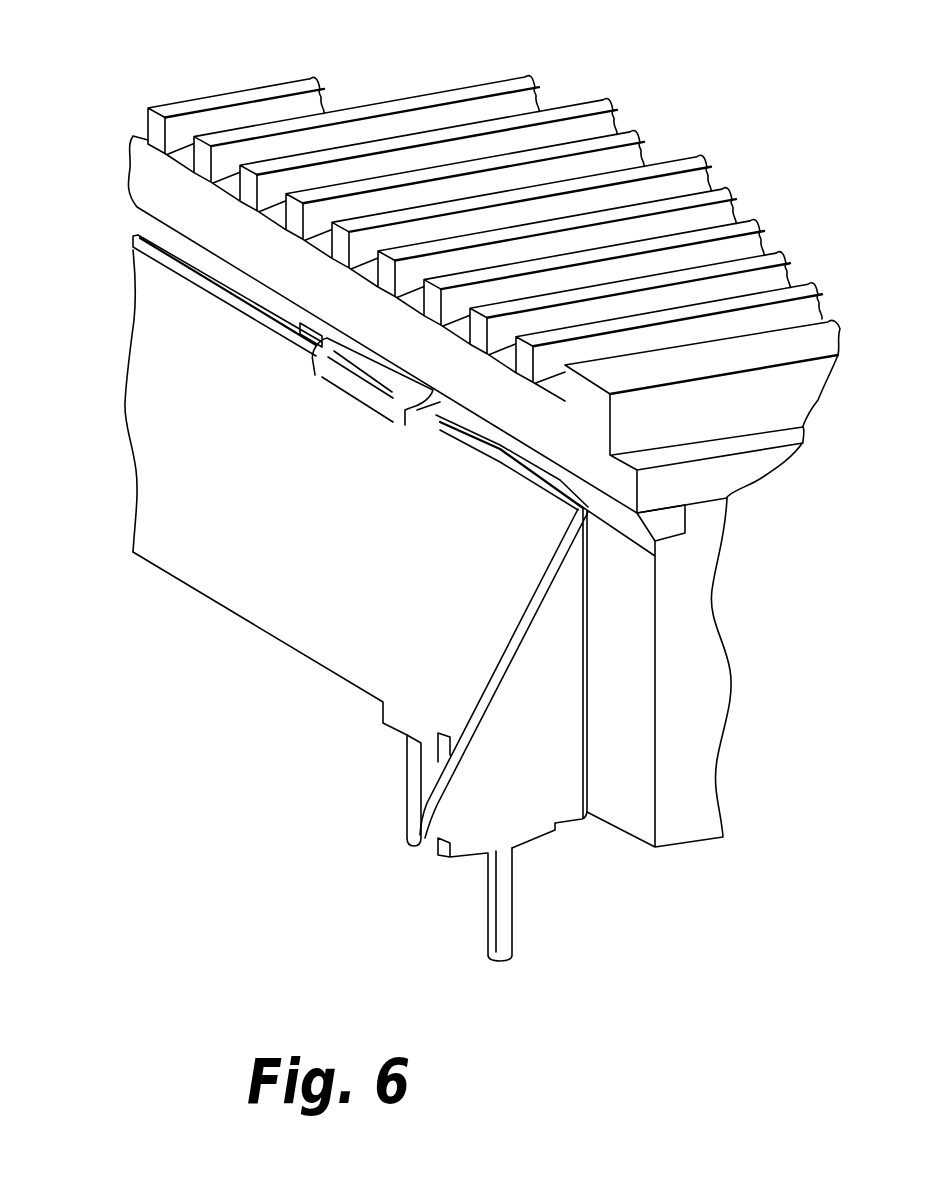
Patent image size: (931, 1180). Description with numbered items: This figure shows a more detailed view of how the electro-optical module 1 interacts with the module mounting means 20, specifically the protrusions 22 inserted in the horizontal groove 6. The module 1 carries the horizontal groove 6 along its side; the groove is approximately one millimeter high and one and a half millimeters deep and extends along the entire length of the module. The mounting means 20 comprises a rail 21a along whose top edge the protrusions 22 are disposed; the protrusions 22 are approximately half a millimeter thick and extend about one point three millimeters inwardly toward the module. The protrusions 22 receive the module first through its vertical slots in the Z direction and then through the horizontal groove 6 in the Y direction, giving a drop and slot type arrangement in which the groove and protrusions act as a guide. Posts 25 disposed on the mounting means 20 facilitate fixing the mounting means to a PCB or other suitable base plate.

The electro-optical module 1 is at (563, 98).
The horizontal groove 6 is at (665, 520).
The module mounting means 20 is at (306, 523).
The rail 21a is at (180, 385).
The protrusions 22 is at (355, 387).
The posts 25 is at (410, 832).